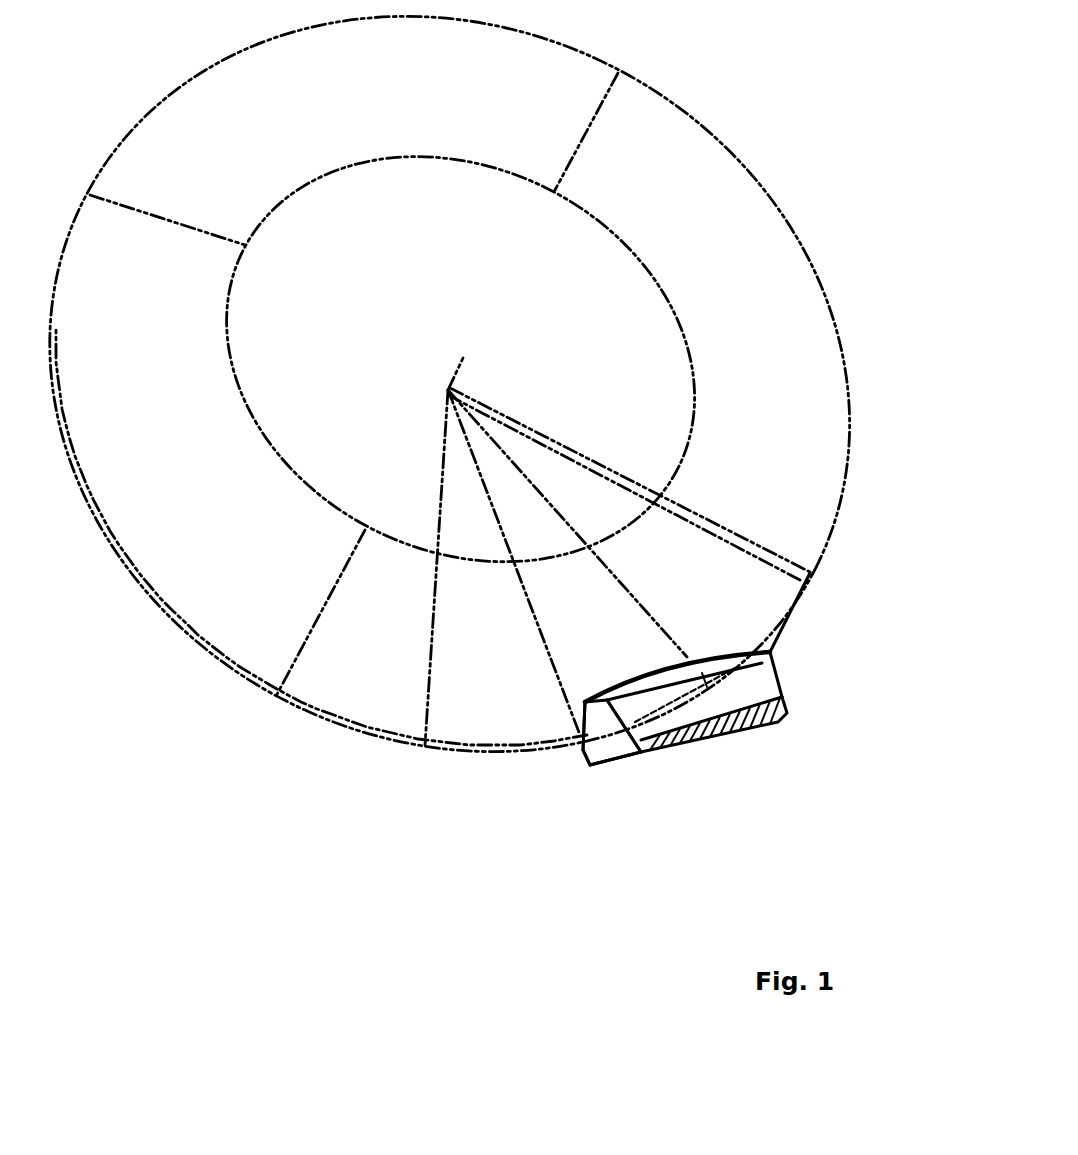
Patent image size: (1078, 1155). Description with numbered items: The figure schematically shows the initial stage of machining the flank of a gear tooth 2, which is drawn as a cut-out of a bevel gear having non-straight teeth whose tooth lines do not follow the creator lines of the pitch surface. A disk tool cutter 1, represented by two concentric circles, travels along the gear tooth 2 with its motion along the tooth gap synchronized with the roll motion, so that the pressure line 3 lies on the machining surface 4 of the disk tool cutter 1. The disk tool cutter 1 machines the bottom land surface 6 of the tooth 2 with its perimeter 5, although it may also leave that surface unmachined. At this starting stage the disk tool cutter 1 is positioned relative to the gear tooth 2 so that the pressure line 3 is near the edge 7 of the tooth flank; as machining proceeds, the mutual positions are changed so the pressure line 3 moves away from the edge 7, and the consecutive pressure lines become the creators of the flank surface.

The disk tool cutter 1 is at (360, 685).
The gear tooth 2 is at (658, 733).
The pressure line 3 is at (693, 733).
The machining surface 4 is at (425, 698).
The perimeter 5 is at (343, 727).
The bottom land surface 6 is at (737, 723).
The edge of the tooth flank 7 is at (630, 733).